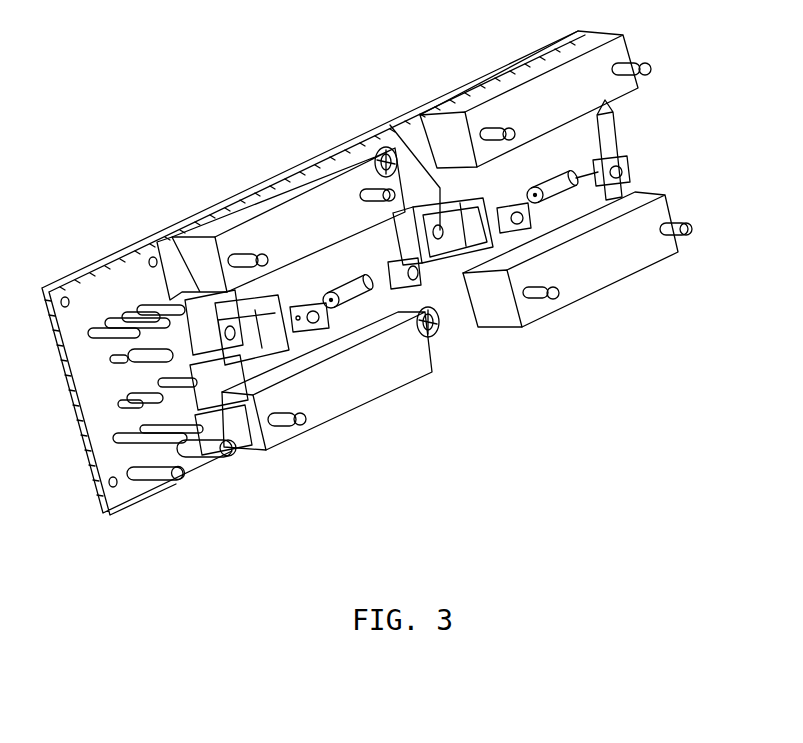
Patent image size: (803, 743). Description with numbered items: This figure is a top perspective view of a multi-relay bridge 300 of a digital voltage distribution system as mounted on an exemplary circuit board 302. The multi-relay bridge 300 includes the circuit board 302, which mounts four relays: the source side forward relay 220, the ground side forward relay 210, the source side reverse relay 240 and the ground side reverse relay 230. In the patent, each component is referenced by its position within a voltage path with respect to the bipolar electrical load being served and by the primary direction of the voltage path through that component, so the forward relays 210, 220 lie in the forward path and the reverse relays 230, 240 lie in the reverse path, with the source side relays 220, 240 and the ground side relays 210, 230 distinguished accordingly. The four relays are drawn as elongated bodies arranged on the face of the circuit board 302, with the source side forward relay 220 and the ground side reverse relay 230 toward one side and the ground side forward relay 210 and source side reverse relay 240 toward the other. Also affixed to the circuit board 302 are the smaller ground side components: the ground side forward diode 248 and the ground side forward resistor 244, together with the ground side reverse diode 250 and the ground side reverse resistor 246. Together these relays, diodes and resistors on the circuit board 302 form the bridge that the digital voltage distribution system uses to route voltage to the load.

The multi-relay bridge 300 is at (122, 35).
The circuit board 302 is at (143, 495).
The ground side forward relay 210 is at (549, 314).
The source side forward relay 220 is at (292, 177).
The ground side reverse relay 230 is at (303, 436).
The source side reverse relay 240 is at (631, 42).
The ground side forward resistor 244 is at (557, 196).
The ground side reverse resistor 246 is at (353, 293).
The ground side forward diode 248 is at (374, 160).
The ground side reverse diode 250 is at (166, 248).